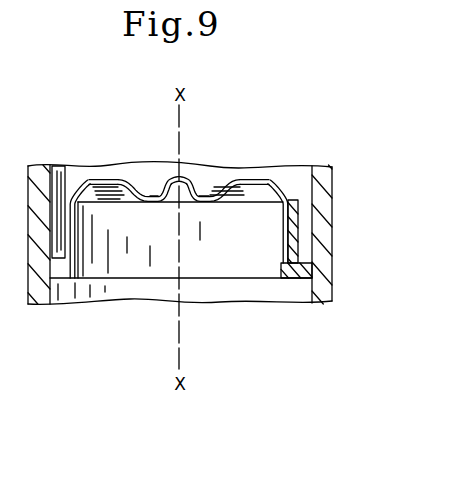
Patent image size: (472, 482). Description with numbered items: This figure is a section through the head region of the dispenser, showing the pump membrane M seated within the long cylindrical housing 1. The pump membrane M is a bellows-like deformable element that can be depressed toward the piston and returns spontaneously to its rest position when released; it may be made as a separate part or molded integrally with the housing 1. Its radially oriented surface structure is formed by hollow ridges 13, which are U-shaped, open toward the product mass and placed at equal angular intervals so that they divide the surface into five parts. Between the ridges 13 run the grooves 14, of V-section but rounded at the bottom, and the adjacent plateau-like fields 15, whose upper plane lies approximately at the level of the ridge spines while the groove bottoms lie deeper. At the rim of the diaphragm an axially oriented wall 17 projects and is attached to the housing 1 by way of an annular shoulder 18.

The housing 1 is at (330, 292).
The pump membrane M is at (293, 181).
The hollow ridges 13 is at (179, 177).
The grooves 14 is at (154, 198).
The fields 15 is at (100, 180).
The axially oriented wall 17 is at (296, 224).
The annular shoulder 18 is at (300, 271).